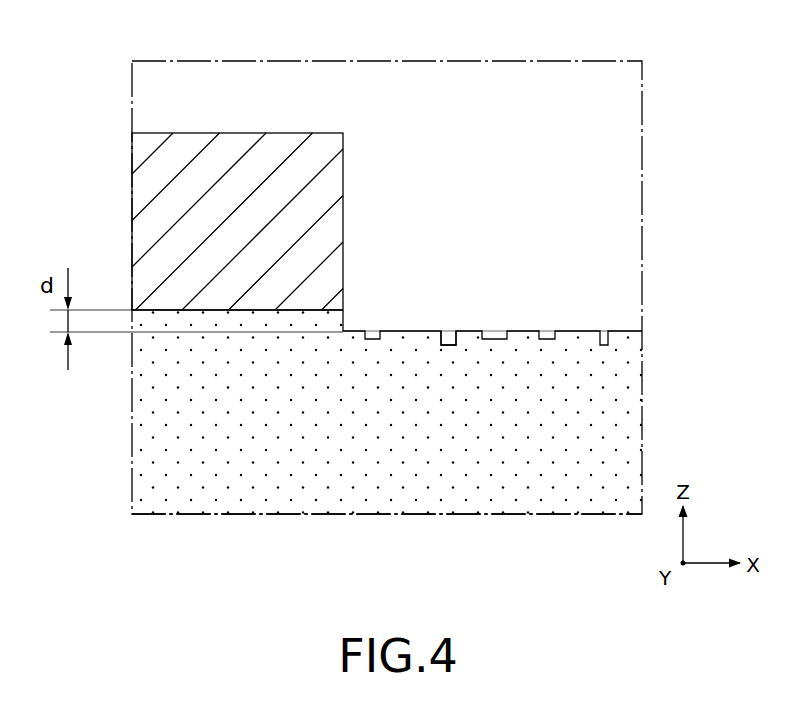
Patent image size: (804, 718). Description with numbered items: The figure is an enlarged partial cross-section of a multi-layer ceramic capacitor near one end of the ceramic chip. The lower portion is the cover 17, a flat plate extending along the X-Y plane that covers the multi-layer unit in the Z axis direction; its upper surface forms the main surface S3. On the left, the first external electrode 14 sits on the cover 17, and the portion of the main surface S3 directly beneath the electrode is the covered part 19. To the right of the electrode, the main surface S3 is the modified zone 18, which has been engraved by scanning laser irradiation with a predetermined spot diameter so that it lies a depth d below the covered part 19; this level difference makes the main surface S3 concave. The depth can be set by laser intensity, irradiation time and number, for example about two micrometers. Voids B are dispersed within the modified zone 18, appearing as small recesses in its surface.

The first external electrode 14 is at (243, 148).
The cover 17 is at (232, 487).
The modified zone 18 is at (532, 305).
The covered part 19 is at (175, 308).
The main surface S3 is at (392, 248).
The void B is at (447, 330).